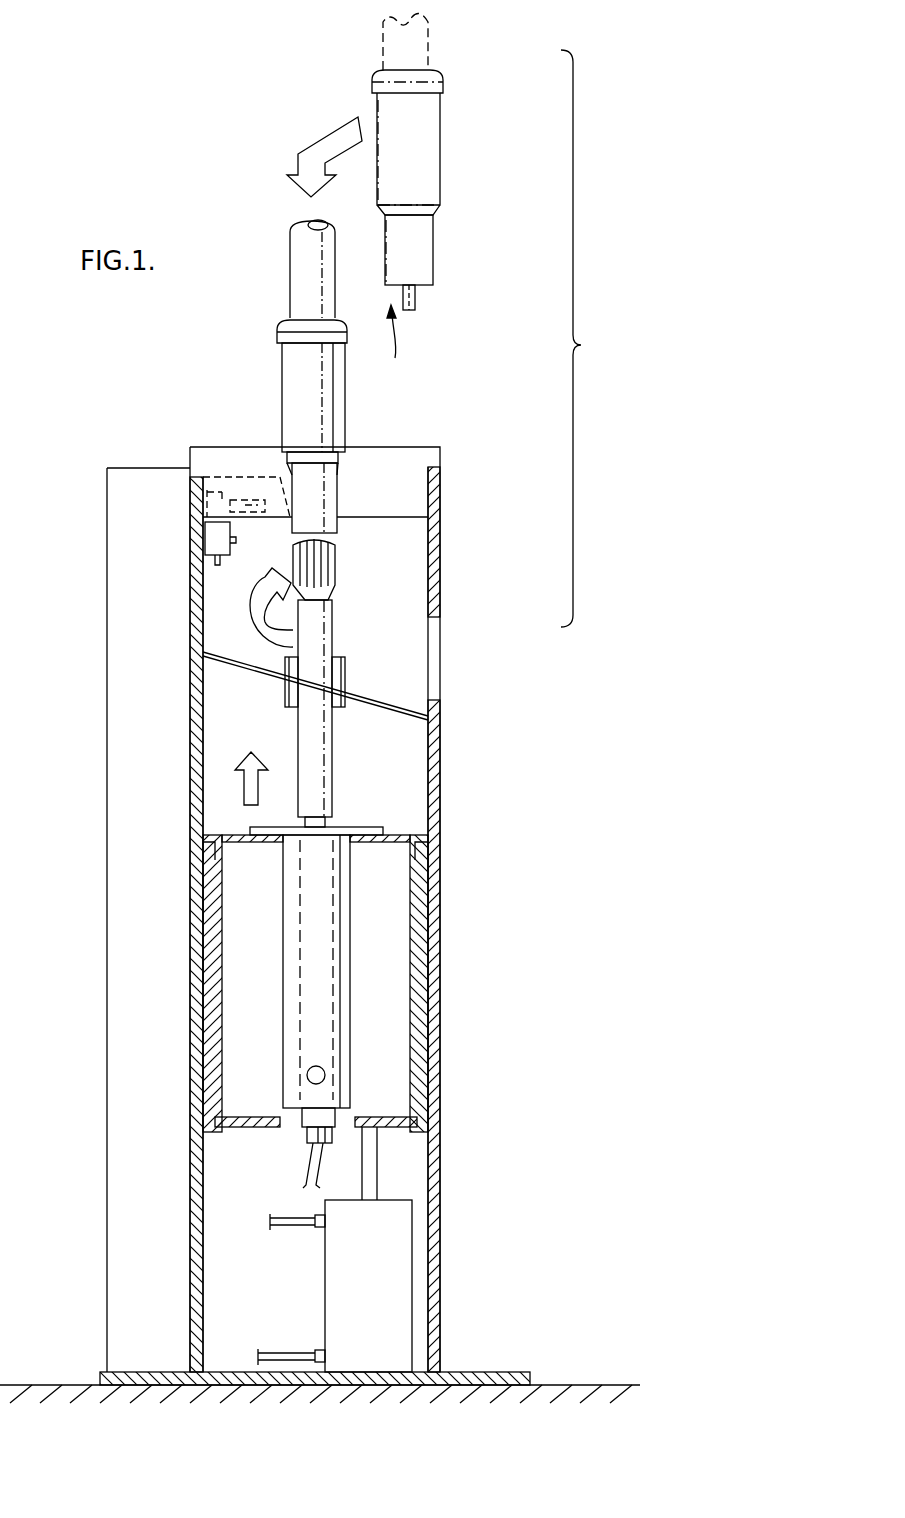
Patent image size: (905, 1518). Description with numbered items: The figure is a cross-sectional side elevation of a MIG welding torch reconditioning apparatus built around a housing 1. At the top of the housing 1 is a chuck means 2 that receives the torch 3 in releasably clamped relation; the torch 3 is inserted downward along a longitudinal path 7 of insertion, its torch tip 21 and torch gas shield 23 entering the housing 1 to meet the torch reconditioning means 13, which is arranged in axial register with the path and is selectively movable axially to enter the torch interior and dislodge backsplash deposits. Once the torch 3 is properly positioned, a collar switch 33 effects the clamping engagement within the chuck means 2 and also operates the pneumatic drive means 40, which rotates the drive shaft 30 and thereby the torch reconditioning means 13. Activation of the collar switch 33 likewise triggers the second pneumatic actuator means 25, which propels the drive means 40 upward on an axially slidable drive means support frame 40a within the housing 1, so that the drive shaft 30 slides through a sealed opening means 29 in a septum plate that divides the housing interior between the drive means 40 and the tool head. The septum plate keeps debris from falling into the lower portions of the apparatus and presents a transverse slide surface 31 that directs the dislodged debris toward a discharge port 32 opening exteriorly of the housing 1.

The housing 1 is at (460, 569).
The chuck means 2 is at (397, 490).
The torch 3 is at (346, 367).
The longitudinal path of insertion 7 is at (291, 226).
The torch reconditioning means 13 is at (345, 582).
The torch tip 21 is at (415, 310).
The torch gas shield 23 is at (326, 509).
The second pneumatic actuator means 25 is at (377, 1270).
The sealed opening means 29 is at (346, 668).
The drive shaft 30 is at (325, 785).
The transverse slide surface 31 is at (417, 703).
The discharge port 32 is at (440, 657).
The collar switch 33 is at (205, 545).
The pneumatic drive means 40 is at (323, 1035).
The axially slidable drive means support frame 40a is at (440, 878).